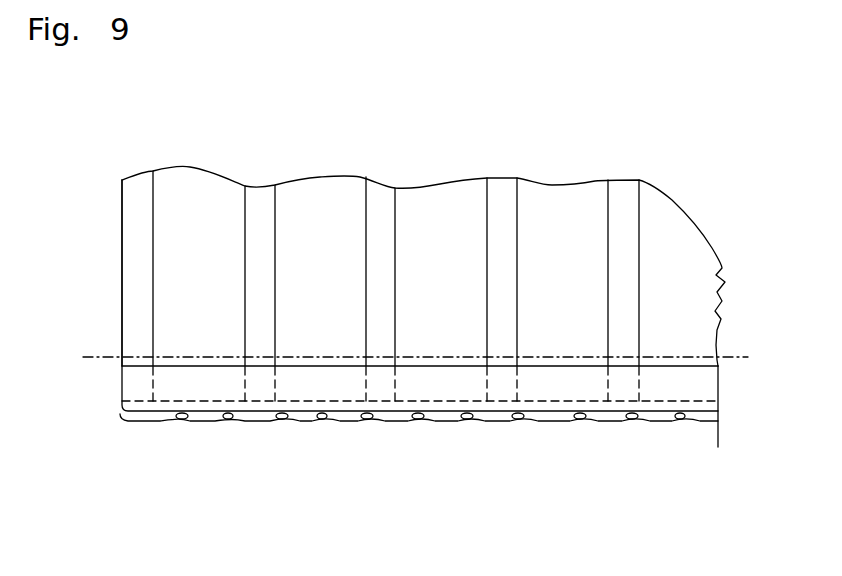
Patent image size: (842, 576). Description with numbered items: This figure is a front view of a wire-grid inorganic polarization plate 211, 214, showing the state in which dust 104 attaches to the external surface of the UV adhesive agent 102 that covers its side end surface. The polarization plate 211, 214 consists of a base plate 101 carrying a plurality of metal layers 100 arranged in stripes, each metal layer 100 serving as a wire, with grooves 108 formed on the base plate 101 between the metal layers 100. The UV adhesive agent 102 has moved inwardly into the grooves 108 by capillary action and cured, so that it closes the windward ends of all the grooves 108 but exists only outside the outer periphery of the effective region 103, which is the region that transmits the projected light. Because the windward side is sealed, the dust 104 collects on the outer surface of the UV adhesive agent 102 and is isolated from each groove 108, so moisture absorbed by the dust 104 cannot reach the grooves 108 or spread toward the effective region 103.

The metal layer 100 is at (387, 208).
The base plate 101 is at (433, 200).
The UV adhesive agent 102 is at (210, 408).
The effective region 103 is at (691, 354).
The dust 104 is at (392, 418).
The groove 108 is at (182, 208).
The incident-side polarization plate 211 is at (648, 222).
The first emission-side polarization plate 214 is at (665, 260).